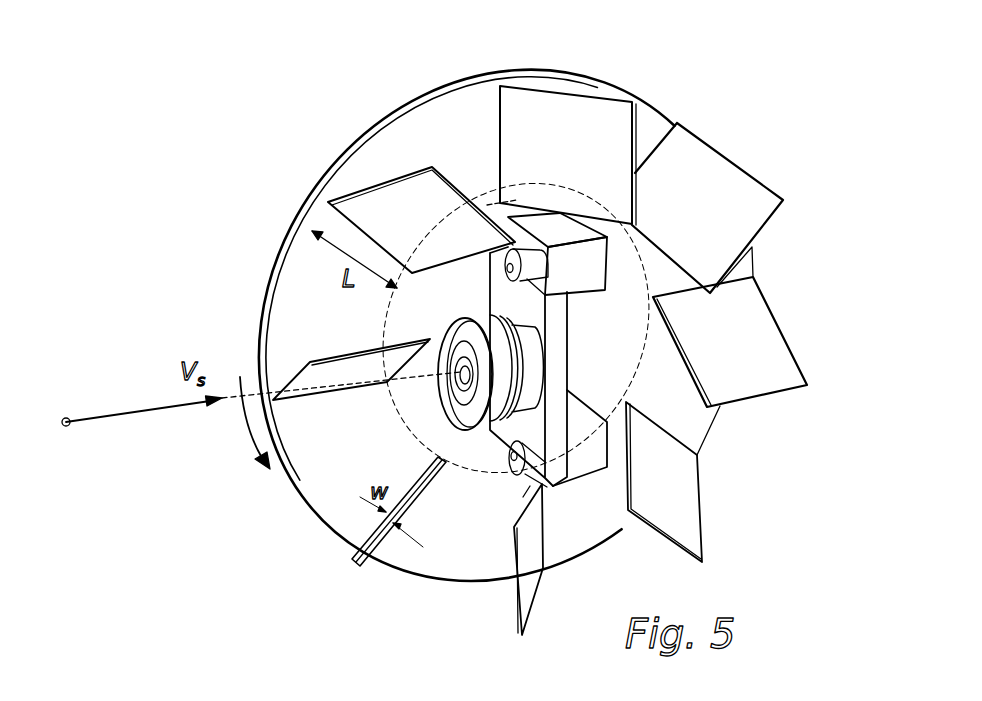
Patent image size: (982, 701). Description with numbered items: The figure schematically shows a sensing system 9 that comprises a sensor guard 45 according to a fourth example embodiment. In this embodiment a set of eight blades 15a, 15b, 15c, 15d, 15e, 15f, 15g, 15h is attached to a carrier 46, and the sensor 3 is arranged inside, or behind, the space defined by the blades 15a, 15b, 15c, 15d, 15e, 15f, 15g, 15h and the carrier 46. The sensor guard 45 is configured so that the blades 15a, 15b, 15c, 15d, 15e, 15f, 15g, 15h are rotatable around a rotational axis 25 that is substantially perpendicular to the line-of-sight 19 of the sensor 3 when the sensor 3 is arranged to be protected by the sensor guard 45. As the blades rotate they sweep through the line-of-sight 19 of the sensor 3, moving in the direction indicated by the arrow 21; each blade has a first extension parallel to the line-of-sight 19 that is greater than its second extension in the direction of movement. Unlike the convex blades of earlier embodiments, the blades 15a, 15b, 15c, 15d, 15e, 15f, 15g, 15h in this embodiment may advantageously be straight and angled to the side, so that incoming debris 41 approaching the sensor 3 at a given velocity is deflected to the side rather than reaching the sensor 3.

The sensing system 9 is at (745, 66).
The carrier 46 is at (438, 122).
The sensor guard 45 is at (814, 211).
The blade 15a is at (367, 190).
The blade 15b is at (333, 385).
The blade 15c is at (372, 565).
The blade 15d is at (527, 590).
The blade 15e is at (685, 488).
The blade 15f is at (752, 335).
The blade 15g is at (725, 182).
The blade 15h is at (573, 118).
The rotational axis 25 is at (523, 337).
The sensor 3 is at (460, 373).
The debris 41 is at (66, 418).
The line-of-sight 19 is at (233, 399).
The arrow 21 is at (253, 438).